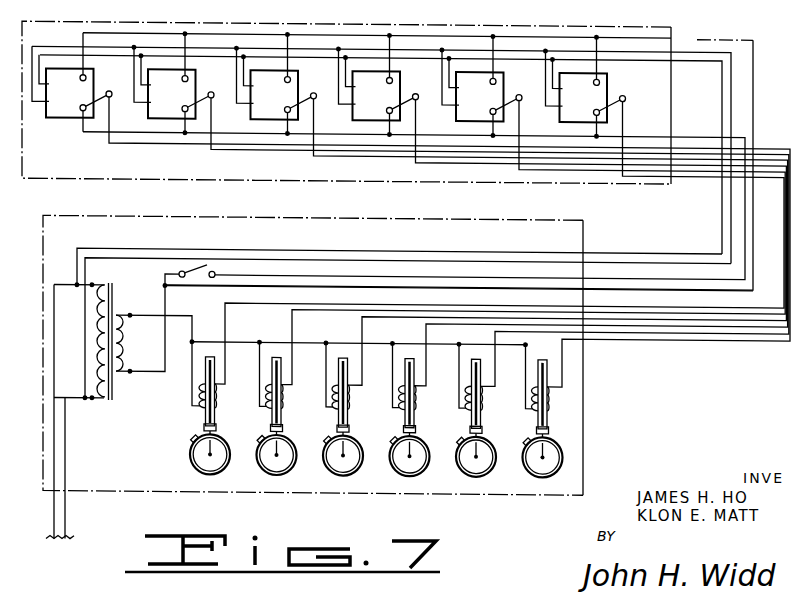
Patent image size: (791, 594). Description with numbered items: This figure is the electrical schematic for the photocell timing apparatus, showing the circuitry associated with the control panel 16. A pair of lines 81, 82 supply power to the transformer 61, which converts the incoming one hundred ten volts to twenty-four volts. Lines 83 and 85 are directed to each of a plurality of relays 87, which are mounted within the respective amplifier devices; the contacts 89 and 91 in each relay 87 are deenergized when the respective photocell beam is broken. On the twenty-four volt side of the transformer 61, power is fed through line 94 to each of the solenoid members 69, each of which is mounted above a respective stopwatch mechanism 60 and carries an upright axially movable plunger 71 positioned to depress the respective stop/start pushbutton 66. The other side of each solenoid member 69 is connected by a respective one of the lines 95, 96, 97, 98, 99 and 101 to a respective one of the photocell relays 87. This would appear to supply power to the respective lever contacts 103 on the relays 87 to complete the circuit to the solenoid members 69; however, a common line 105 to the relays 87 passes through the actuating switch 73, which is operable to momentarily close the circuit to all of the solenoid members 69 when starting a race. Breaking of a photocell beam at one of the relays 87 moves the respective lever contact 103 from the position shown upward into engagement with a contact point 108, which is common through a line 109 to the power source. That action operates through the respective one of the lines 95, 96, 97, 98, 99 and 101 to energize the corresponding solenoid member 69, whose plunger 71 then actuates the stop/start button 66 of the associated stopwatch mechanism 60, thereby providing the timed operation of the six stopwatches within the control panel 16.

The control panel 16 is at (303, 492).
The stopwatch mechanism 60 is at (397, 472).
The transformer 61 is at (122, 308).
The stop/start pushbutton 66 is at (549, 427).
The solenoid member 69 is at (203, 400).
The plunger 71 is at (550, 355).
The actuating switch 73 is at (193, 270).
The line 81 is at (53, 513).
The line 82 is at (67, 513).
The line 83 is at (90, 247).
The line 85 is at (143, 256).
The relay 87 is at (298, 84).
The contact 89 is at (83, 110).
The contact 91 is at (127, 76).
The line 94 is at (181, 313).
The line 95 is at (228, 324).
The line 96 is at (295, 326).
The line 97 is at (364, 331).
The line 98 is at (428, 334).
The line 99 is at (498, 336).
The line 101 is at (565, 347).
The lever contact 103 is at (88, 101).
The common line 105 is at (247, 272).
The contact point 108 is at (84, 74).
The line 109 is at (698, 34).